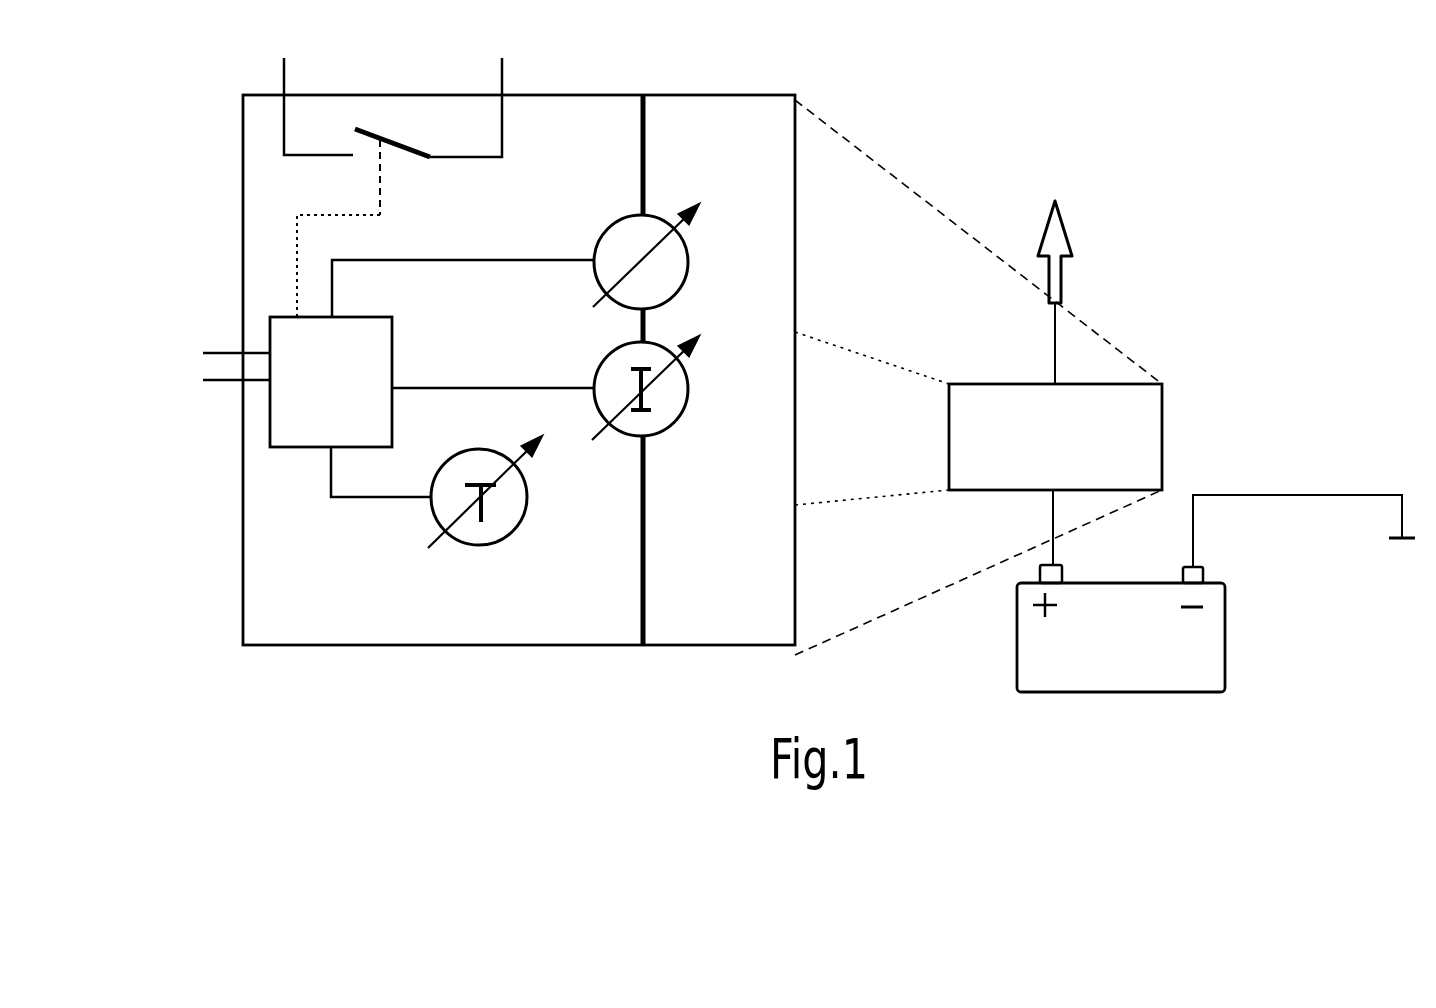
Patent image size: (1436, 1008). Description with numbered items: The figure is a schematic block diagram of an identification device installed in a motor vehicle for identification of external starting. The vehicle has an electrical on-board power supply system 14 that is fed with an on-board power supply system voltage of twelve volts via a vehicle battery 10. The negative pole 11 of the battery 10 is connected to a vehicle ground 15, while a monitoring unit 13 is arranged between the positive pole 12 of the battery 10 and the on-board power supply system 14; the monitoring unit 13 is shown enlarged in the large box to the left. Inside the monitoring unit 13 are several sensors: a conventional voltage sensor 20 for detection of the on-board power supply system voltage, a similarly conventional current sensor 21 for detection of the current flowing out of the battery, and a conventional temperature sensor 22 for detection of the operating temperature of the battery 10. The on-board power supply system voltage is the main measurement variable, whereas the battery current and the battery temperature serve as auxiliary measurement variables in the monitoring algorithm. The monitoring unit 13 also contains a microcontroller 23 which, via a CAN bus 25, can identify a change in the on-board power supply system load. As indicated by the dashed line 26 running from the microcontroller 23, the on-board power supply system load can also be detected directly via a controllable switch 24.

The vehicle battery 10 is at (1121, 628).
The negative pole 11 is at (1297, 515).
The positive pole 12 is at (1070, 527).
The monitoring unit 13 is at (1055, 437).
The electrical on-board power supply system 14 is at (1072, 292).
The vehicle ground 15 is at (1403, 558).
The voltage sensor 20 is at (516, 260).
The current sensor 21 is at (546, 387).
The temperature sensor 22 is at (443, 494).
The microcontroller 23 is at (350, 382).
The controllable switch 24 is at (393, 107).
The CAN bus 25 is at (205, 391).
The dashed line 26 is at (381, 190).